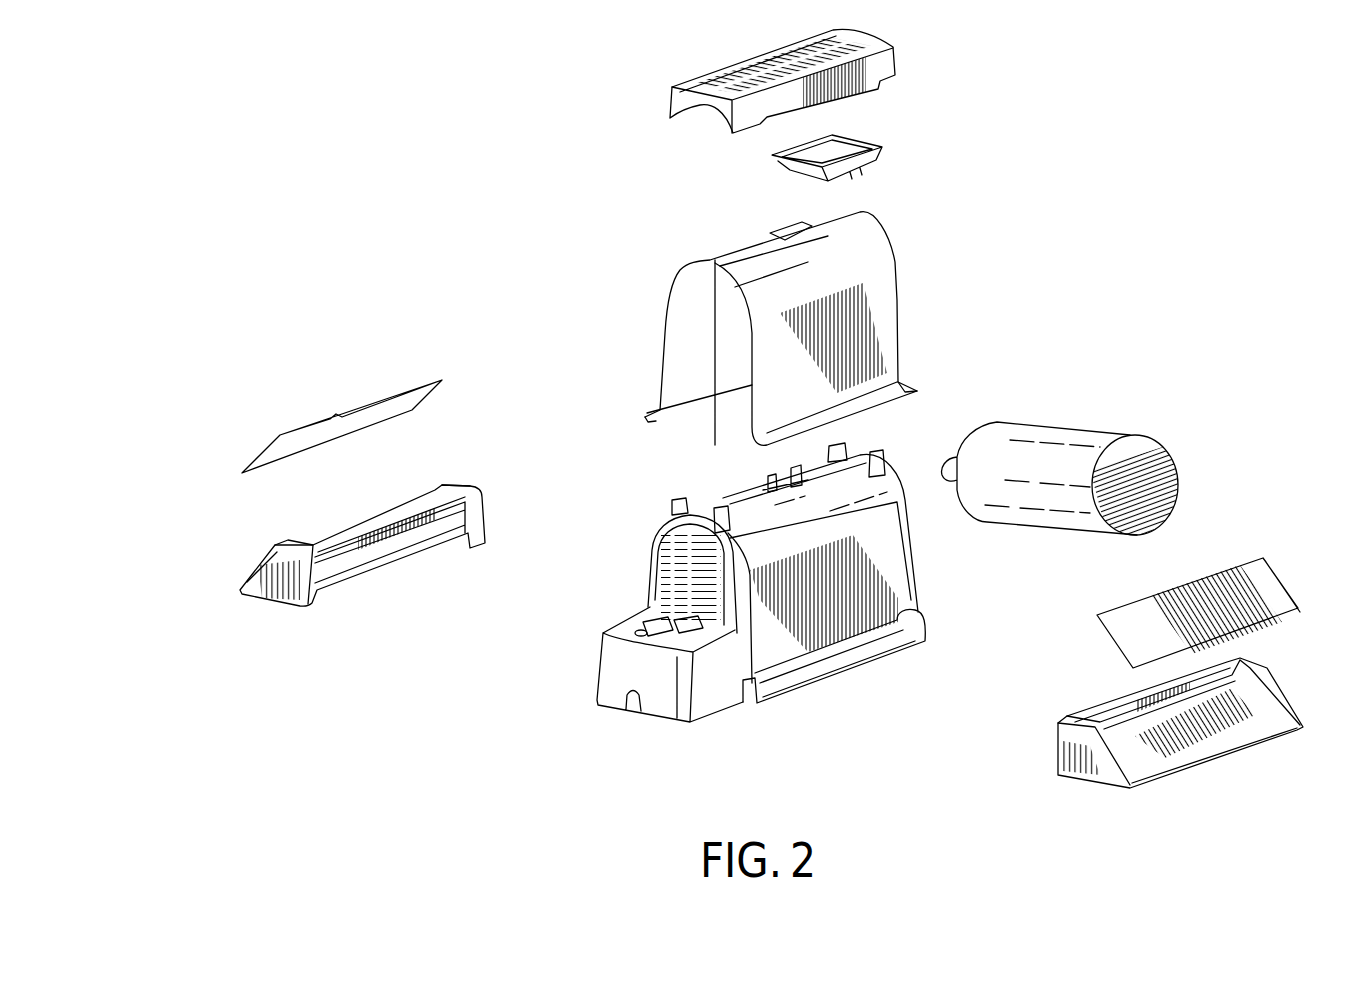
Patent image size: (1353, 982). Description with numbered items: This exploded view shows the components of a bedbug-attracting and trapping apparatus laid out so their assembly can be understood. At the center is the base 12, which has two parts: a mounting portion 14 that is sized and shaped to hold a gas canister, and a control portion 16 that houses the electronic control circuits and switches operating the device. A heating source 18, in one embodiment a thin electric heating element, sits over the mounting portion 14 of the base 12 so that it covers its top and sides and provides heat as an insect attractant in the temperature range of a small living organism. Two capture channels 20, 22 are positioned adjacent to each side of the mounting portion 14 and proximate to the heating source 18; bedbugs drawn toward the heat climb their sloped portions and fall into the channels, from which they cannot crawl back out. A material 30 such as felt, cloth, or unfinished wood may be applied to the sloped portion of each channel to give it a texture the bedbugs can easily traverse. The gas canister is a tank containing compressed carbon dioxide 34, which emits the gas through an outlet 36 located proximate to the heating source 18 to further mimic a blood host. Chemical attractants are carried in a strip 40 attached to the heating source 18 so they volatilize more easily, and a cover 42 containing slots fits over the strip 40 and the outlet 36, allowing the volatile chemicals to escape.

The base 12 is at (922, 600).
The mounting portion 14 is at (650, 547).
The control portion 16 is at (598, 704).
The heating source 18 is at (898, 298).
The capture channel 20 is at (1255, 745).
The capture channel 22 is at (240, 588).
The material 30 is at (1273, 572).
The tank containing compressed CO2 34 is at (1167, 450).
The outlet 36 is at (807, 465).
The strip 40 is at (875, 157).
The cover 42 is at (890, 78).